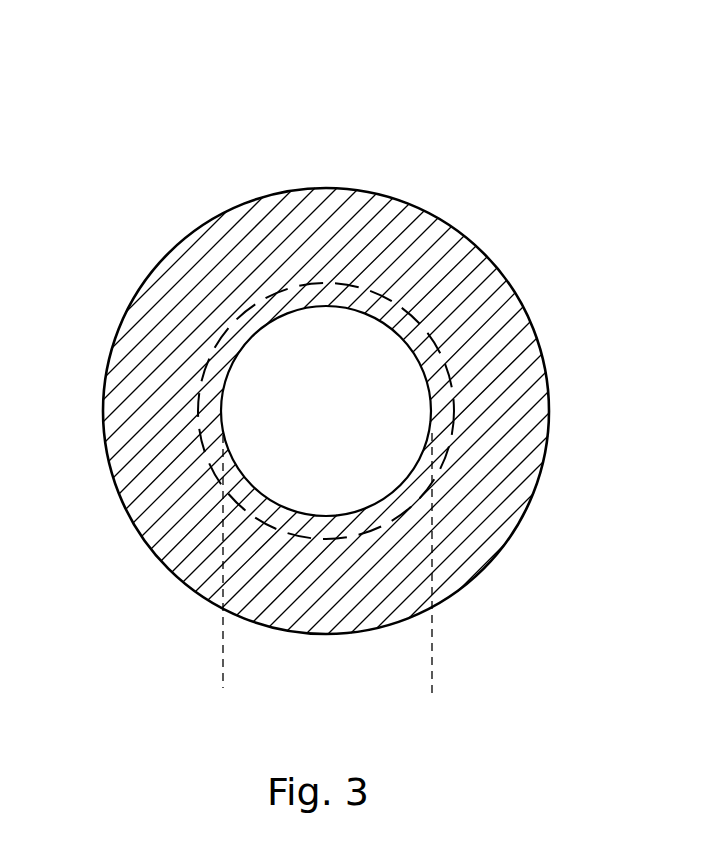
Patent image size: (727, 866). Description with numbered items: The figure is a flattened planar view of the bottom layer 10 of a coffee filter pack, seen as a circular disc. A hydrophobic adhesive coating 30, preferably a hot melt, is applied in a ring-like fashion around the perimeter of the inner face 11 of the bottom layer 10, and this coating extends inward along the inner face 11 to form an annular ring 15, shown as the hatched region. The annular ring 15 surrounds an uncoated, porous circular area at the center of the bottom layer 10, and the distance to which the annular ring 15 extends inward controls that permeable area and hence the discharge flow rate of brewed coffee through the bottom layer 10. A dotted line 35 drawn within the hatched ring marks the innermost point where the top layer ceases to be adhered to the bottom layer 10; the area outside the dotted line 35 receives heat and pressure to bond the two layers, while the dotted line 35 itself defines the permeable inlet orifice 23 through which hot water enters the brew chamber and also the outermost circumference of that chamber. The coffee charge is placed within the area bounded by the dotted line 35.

The bottom layer 10 is at (542, 368).
The inner face 11 is at (507, 505).
The annular ring 15 is at (330, 583).
The inlet permeable inlet orifice 23 is at (244, 322).
The hydrophobic adhesive coating 30 is at (443, 285).
The dotted line 35 is at (332, 284).